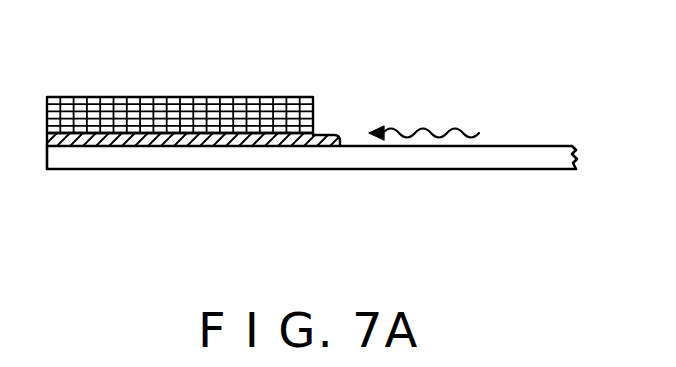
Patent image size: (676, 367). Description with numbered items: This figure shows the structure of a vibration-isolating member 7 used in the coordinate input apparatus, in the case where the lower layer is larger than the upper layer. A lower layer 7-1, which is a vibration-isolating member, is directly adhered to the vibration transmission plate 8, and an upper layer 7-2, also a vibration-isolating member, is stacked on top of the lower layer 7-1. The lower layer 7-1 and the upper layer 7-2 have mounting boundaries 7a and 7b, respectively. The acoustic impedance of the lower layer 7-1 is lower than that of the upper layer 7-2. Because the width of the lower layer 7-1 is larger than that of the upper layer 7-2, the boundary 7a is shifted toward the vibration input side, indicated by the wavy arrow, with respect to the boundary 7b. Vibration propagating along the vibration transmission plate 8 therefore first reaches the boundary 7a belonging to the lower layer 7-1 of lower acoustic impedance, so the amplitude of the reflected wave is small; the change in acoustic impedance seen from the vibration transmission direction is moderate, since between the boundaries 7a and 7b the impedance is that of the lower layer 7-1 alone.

The vibration-isolating member 7 is at (225, 82).
The upper layer 7-2 is at (300, 97).
The lower layer 7-1 is at (332, 136).
The mounting boundary of lower layer 7a is at (340, 178).
The mounting boundary of upper layer 7b is at (310, 178).
The vibration transmission plate 8 is at (432, 157).